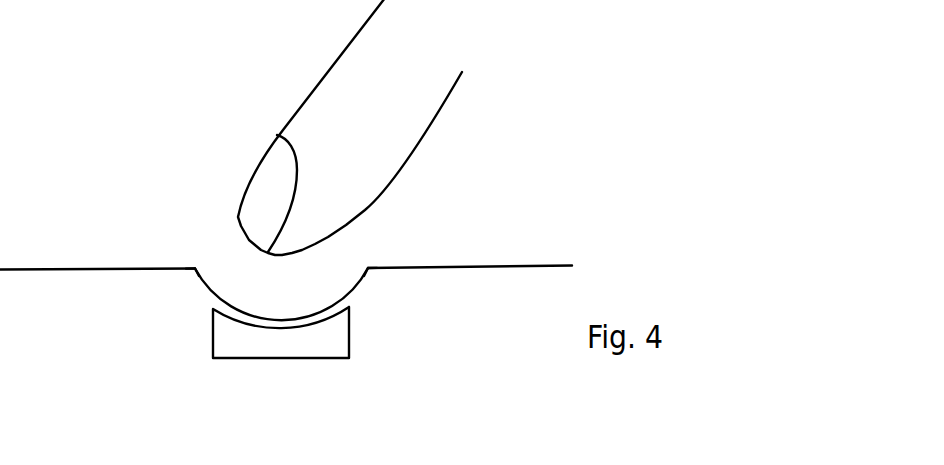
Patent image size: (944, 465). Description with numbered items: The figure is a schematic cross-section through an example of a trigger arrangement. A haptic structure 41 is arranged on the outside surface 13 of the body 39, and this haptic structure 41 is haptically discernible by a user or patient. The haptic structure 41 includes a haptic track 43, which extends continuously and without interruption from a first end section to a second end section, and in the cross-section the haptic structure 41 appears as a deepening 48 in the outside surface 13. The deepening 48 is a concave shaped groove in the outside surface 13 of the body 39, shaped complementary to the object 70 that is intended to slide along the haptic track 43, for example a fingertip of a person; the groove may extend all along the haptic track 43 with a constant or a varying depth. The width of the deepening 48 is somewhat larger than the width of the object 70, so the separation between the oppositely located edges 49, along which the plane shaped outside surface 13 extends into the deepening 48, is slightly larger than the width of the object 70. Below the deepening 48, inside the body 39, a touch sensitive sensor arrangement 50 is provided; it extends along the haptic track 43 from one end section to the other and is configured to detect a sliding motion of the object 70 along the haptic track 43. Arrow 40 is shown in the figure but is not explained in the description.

The outside surface 13 is at (40, 268).
The body 39 is at (101, 358).
The finger touch input 40 is at (197, 170).
The haptic structure 41 is at (220, 262).
The haptic track 43 is at (232, 210).
The deepening 48 is at (285, 312).
The edges 49 is at (193, 270).
The touch sensitive sensor arrangement 50 is at (328, 342).
The object 70 is at (387, 150).